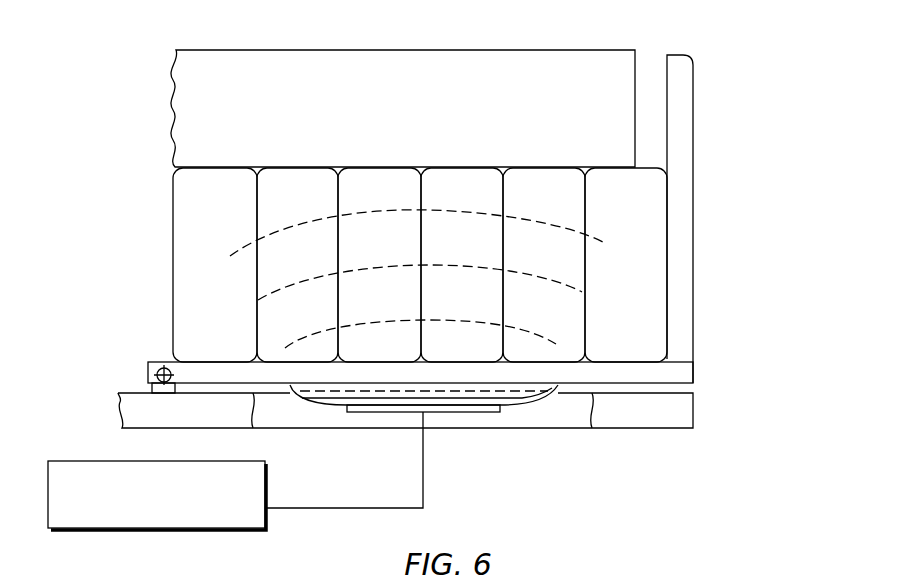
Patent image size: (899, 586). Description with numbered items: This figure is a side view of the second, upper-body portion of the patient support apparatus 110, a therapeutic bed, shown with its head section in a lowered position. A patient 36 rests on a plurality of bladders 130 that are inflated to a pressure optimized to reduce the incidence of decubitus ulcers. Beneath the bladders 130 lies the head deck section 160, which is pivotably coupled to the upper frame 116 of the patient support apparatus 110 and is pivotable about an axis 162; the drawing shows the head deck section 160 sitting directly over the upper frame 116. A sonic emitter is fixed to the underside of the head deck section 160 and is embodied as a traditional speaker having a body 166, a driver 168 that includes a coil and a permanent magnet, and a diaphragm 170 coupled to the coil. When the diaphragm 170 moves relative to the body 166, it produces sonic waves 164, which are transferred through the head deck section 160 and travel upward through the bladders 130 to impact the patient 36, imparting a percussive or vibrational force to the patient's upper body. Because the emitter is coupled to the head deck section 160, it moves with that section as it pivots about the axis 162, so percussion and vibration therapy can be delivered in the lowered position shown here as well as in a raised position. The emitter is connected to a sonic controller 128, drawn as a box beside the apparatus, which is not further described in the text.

The patient 36 is at (557, 97).
The patient support apparatus 110 is at (718, 144).
The bladders 130 is at (385, 190).
The sonic waves 164 is at (557, 343).
The head deck section 160 is at (683, 372).
The axis 162 is at (155, 368).
The upper frame 116 is at (683, 408).
The body 166 is at (515, 405).
The driver 168 is at (452, 412).
The diaphragm 170 is at (368, 392).
The sonic controller 128 is at (143, 529).